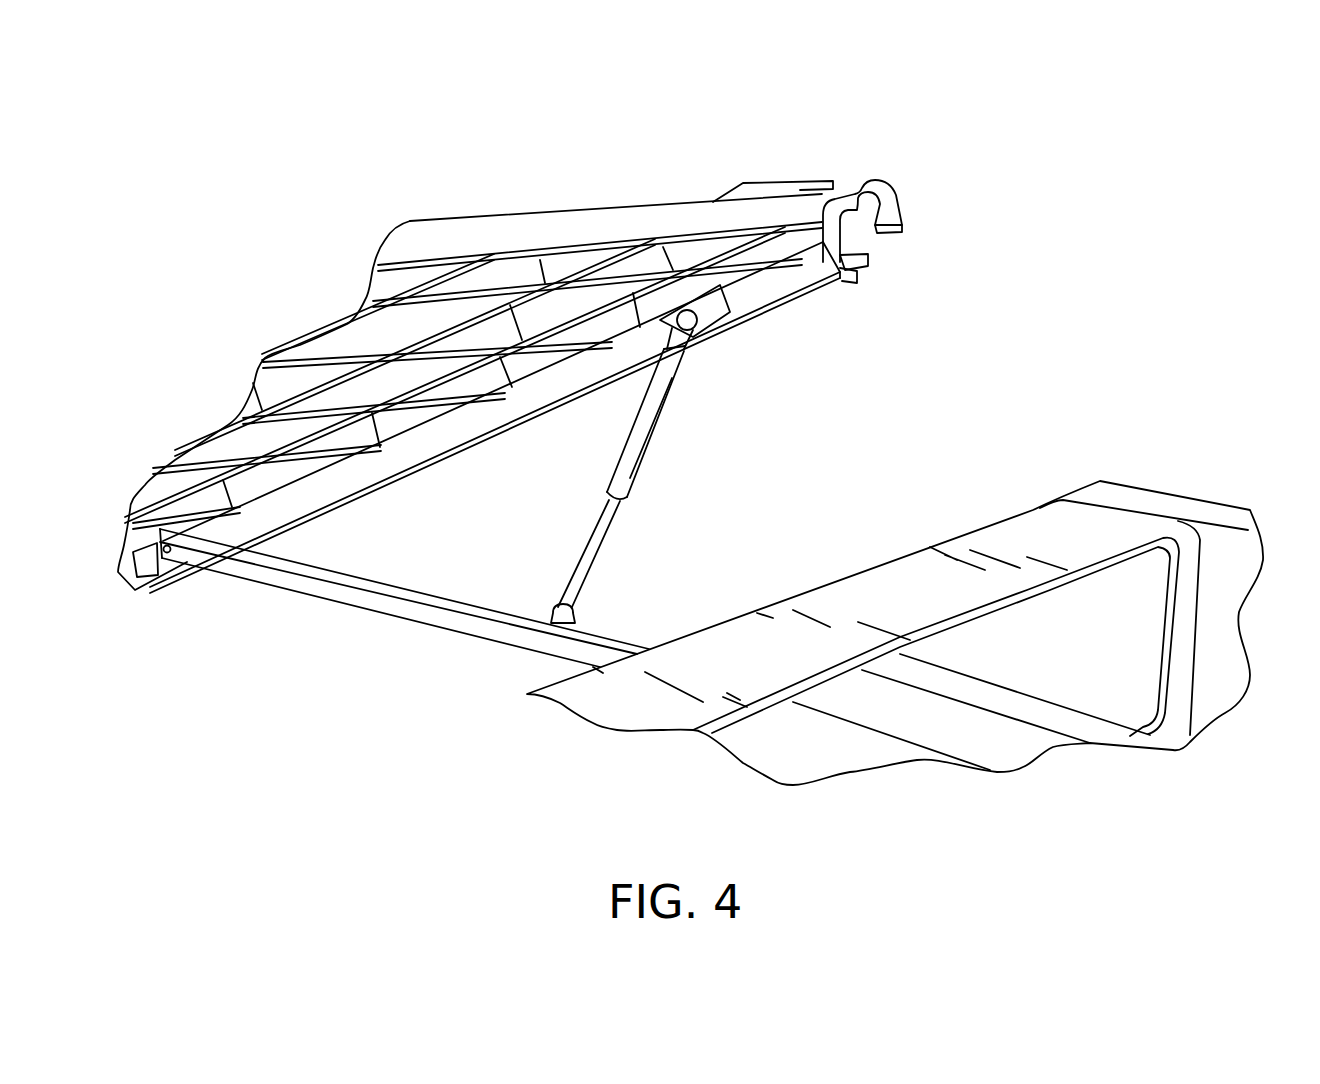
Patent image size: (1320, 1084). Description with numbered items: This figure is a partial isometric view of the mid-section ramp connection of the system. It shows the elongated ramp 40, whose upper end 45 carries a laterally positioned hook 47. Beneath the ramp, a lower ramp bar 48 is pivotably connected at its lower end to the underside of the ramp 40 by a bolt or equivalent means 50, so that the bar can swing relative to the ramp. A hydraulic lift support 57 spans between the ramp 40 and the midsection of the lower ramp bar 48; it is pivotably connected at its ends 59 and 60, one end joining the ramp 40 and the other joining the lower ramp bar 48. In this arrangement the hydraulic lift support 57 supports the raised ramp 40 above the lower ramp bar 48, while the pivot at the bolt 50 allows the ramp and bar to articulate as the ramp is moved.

The elongated ramp 40 is at (310, 387).
The upper end 45 is at (549, 228).
The hook 47 is at (887, 203).
The lower ramp bar 48 is at (378, 606).
The bolt or equivalent means 50 is at (167, 555).
The hydraulic lift support 57 is at (650, 413).
The end of hydraulic lift support 59 is at (692, 323).
The end of hydraulic lift support 60 is at (573, 623).